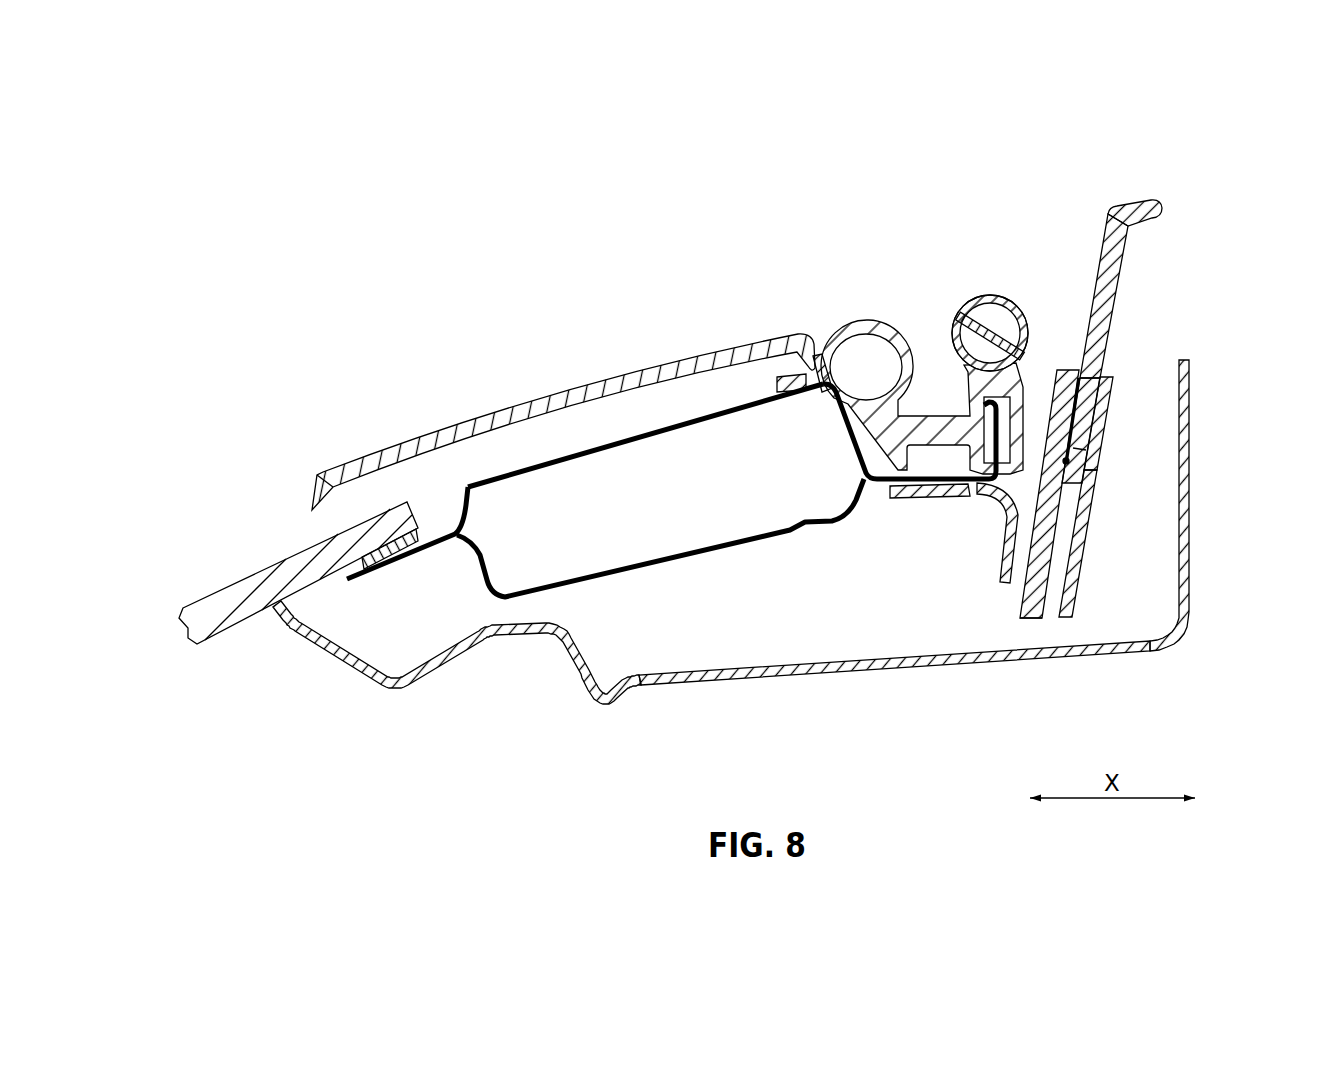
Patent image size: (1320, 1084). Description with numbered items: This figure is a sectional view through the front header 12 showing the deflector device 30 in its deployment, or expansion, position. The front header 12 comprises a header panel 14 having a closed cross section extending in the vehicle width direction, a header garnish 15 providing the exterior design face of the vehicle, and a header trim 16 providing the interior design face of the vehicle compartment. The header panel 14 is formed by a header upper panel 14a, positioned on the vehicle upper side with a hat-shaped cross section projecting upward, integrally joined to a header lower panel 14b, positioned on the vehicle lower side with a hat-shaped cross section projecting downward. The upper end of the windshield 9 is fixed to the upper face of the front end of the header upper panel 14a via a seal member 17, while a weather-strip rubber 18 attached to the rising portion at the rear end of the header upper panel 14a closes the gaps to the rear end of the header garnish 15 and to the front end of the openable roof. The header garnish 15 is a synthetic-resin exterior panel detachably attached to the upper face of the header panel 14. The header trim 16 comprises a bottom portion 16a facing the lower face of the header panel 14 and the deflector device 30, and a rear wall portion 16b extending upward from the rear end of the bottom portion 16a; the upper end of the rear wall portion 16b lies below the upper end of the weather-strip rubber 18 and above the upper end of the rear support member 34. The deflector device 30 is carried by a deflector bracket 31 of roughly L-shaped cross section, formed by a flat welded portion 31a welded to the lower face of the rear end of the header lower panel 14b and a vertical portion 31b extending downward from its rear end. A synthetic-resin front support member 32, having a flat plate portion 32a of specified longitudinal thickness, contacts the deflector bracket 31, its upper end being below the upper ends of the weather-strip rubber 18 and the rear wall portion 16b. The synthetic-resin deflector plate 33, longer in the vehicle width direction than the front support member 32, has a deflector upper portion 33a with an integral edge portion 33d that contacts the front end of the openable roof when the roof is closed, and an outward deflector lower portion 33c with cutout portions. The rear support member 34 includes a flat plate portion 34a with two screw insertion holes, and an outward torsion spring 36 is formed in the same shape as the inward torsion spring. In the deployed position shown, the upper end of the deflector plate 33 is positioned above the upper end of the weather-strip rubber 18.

The windshield 9 is at (210, 599).
The front header 12 is at (330, 352).
The header panel 14 is at (483, 580).
The header upper panel 14a is at (540, 469).
The header lower panel 14b is at (617, 576).
The header garnish 15 is at (495, 406).
The header trim 16 is at (340, 666).
The bottom portion 16a is at (681, 688).
The rear wall portion 16b is at (1185, 505).
The seal member 17 is at (337, 567).
The weather-strip rubber 18 is at (866, 320).
The deflector device 30 is at (1026, 193).
The deflector bracket 31 is at (897, 503).
The welded portion 31a is at (930, 494).
The vertical portion 31b is at (998, 572).
The front support member 32 is at (1062, 370).
The flat plate portion 32a is at (1030, 622).
The deflector plate 33 is at (1140, 314).
The deflector upper portion 33a is at (1112, 260).
The outward deflector lower portion 33c is at (1108, 400).
The edge portion 33d is at (1142, 198).
The rear support member 34 is at (1104, 447).
The flat plate portion 34a is at (1082, 551).
The outward torsion spring 36 is at (1076, 462).